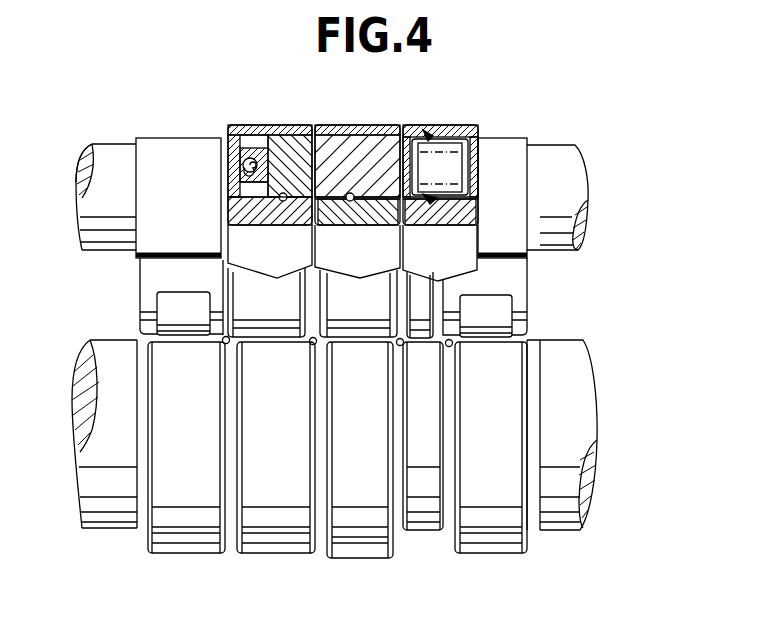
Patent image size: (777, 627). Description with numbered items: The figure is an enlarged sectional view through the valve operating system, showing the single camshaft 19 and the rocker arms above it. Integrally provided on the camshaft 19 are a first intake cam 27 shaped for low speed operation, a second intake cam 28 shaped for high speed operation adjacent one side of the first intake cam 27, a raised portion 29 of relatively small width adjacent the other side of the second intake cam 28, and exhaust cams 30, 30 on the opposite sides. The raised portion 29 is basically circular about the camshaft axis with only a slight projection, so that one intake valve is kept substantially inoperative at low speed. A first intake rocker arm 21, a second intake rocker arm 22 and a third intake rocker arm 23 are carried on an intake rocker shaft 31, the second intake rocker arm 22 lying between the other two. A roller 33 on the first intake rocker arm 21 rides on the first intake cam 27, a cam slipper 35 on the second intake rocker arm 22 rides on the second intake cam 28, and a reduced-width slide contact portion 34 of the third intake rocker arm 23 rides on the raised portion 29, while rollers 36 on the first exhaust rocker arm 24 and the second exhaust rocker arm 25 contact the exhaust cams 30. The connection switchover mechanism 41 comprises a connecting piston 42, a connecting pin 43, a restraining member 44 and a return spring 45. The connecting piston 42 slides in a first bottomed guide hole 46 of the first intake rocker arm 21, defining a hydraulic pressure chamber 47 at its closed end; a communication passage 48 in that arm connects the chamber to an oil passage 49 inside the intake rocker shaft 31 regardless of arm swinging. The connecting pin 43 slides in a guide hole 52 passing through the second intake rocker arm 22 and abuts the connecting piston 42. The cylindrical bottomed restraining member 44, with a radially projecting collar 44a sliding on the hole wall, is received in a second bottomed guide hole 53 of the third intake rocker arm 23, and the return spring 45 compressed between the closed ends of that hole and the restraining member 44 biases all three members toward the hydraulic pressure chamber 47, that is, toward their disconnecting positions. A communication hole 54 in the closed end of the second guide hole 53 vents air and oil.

The camshaft 19 is at (585, 397).
The first intake rocker arm 21 is at (242, 173).
The second intake rocker arm 22 is at (360, 168).
The third intake rocker arm 23 is at (460, 171).
The first exhaust rocker arm 24 is at (147, 282).
The second exhaust rocker arm 25 is at (528, 283).
The first intake cam 27 is at (278, 470).
The second intake cam 28 is at (365, 466).
The raised portion 29 is at (425, 463).
The exhaust cams 30 is at (190, 472).
The intake rocker shaft 31 is at (108, 152).
The roller 33 is at (275, 340).
The slide contact portion 34 is at (421, 340).
The cam slipper 35 is at (357, 340).
The rollers 36 is at (187, 340).
The connection switchover mechanism 41 is at (332, 127).
The connecting piston 42 is at (290, 137).
The connecting pin 43 is at (360, 143).
The restraining member 44 is at (432, 132).
The collar 44a is at (433, 203).
The return spring 45 is at (471, 188).
The first bottomed guide hole 46 is at (293, 229).
The hydraulic pressure chamber 47 is at (247, 194).
The communication passage 48 is at (240, 159).
The oil passage 49 is at (82, 176).
The guide hole 52 is at (350, 201).
The second bottomed guide hole 53 is at (526, 242).
The communication hole 54 is at (477, 170).